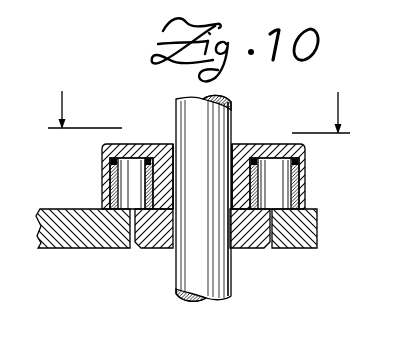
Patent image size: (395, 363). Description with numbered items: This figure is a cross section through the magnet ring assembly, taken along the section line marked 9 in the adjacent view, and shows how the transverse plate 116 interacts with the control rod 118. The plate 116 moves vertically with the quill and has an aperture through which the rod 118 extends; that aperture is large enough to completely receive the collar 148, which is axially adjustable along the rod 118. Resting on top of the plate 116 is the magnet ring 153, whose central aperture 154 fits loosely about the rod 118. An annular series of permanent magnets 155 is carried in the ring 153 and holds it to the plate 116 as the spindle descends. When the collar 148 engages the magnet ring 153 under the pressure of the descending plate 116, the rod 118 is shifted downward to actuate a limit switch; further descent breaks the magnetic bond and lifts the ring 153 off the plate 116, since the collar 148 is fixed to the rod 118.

The section line of FIG. 9 is at (201, 107).
The transverse plate 116 is at (312, 235).
The control rod 118 is at (231, 284).
The collar 148 is at (240, 249).
The magnet ring 153 is at (305, 168).
The central aperture 154 is at (234, 146).
The permanent magnets 155 is at (122, 188).